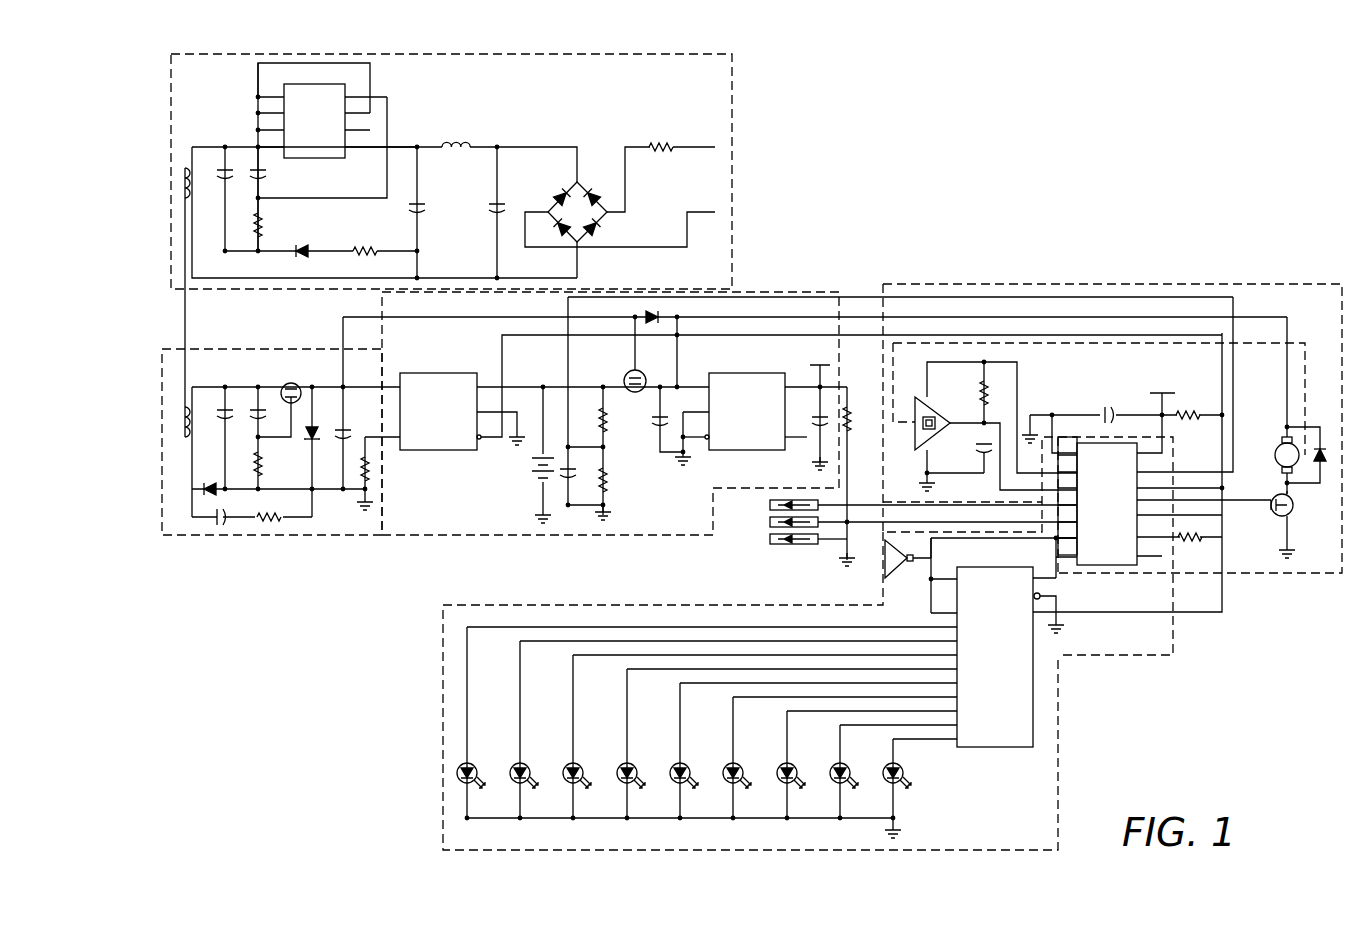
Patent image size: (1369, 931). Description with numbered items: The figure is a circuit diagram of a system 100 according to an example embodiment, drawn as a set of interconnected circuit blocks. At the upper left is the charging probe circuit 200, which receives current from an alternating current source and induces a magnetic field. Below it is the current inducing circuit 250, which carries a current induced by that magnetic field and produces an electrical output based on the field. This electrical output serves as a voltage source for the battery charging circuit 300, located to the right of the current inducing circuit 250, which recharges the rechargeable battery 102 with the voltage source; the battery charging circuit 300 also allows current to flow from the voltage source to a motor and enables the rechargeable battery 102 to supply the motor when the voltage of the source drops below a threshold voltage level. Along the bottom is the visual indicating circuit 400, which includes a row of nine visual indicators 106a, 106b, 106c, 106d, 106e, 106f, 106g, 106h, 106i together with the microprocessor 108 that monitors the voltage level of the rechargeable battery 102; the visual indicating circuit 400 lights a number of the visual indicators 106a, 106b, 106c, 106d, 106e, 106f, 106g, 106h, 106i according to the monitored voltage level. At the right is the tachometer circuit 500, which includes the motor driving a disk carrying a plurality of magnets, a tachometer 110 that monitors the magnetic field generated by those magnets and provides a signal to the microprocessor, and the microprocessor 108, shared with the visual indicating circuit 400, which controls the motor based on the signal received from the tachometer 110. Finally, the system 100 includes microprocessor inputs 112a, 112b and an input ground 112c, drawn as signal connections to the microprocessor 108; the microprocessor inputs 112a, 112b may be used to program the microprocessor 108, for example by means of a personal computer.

The system 100 is at (1063, 144).
The rechargeable battery 102 is at (530, 462).
The visual indicator 106a is at (477, 768).
The visual indicator 106b is at (530, 768).
The visual indicator 106c is at (583, 768).
The visual indicator 106d is at (637, 768).
The visual indicator 106e is at (690, 768).
The visual indicator 106f is at (743, 768).
The visual indicator 106g is at (797, 768).
The visual indicator 106h is at (850, 768).
The visual indicator 106i is at (905, 779).
The microprocessor 108 is at (1127, 547).
The tachometer 110 is at (917, 437).
The microprocessor input 112a is at (898, 506).
The microprocessor input 112b is at (898, 523).
The input ground 112c is at (783, 540).
The charging probe circuit 200 is at (732, 122).
The current inducing circuit 250 is at (268, 537).
The battery charging circuit 300 is at (525, 537).
The visual indicating circuit 400 is at (443, 682).
The tachometer circuit 500 is at (1290, 575).